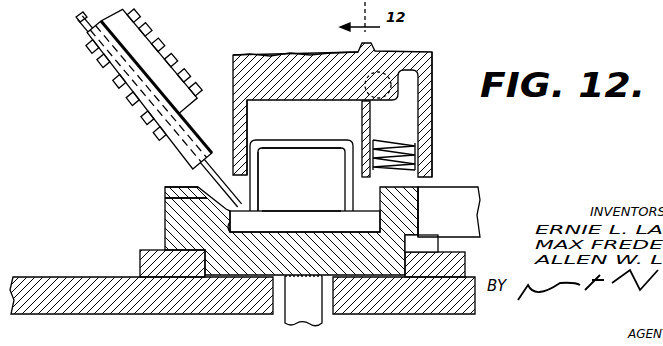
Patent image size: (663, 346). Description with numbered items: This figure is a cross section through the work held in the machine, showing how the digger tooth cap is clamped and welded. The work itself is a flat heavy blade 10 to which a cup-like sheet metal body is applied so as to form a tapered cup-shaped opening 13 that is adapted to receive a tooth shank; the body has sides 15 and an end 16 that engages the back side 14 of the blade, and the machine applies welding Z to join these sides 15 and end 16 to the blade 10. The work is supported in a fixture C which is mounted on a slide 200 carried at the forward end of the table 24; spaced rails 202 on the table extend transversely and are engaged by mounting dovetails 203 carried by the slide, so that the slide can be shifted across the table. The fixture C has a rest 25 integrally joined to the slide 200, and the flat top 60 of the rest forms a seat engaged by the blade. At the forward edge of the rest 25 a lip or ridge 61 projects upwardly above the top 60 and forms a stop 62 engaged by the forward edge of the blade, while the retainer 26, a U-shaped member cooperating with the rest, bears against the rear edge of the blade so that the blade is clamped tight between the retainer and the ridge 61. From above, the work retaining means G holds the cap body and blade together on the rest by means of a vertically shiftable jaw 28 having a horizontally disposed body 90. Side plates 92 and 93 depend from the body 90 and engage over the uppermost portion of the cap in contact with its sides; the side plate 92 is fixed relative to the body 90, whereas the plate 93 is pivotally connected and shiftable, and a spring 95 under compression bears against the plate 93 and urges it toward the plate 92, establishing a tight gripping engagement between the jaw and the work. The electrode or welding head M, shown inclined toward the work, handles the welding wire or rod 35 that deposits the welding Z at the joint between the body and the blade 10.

The blade 10 is at (305, 221).
The cup-shaped opening 13 is at (301, 157).
The back side of the blade 14 is at (300, 210).
The sides of the body 15 is at (259, 194).
The end of the body 16 is at (290, 140).
The table 24 is at (58, 277).
The rest 25 is at (160, 237).
The retainer 26 is at (462, 188).
The jaw 28 is at (430, 62).
The welding wire or rod 35 is at (78, 19).
The flat top of the rest 60 is at (437, 233).
The lip or ridge 61 is at (165, 187).
The stop 62 is at (232, 228).
The body of the jaw 90 is at (255, 58).
The side plate 92 is at (247, 119).
The side plate 93 is at (362, 125).
The spring 95 is at (393, 145).
The slide 200 is at (440, 245).
The rails 202 is at (140, 266).
The mounting dovetails 203 is at (208, 314).
The fixture C is at (160, 219).
The work retaining means G is at (303, 62).
The electrode or welding head M is at (110, 70).
The welding Z is at (165, 199).